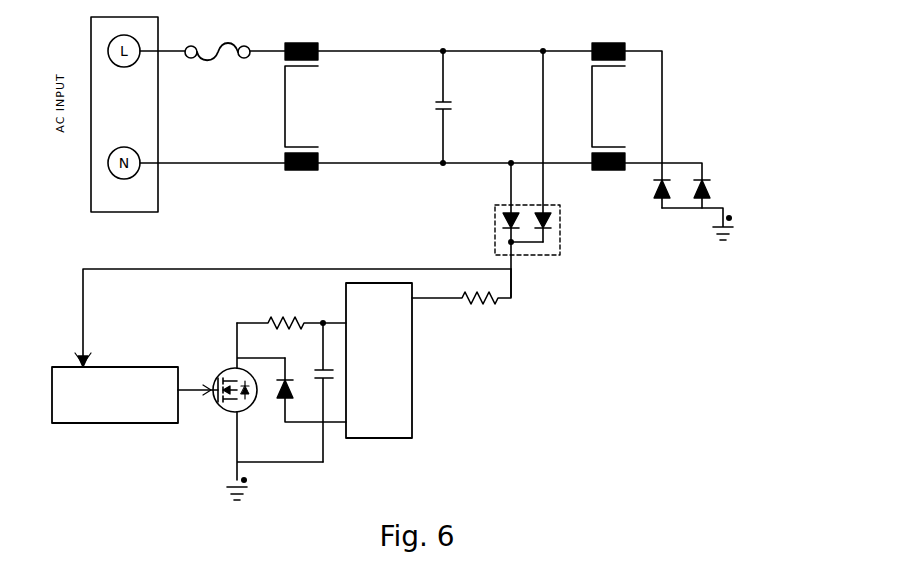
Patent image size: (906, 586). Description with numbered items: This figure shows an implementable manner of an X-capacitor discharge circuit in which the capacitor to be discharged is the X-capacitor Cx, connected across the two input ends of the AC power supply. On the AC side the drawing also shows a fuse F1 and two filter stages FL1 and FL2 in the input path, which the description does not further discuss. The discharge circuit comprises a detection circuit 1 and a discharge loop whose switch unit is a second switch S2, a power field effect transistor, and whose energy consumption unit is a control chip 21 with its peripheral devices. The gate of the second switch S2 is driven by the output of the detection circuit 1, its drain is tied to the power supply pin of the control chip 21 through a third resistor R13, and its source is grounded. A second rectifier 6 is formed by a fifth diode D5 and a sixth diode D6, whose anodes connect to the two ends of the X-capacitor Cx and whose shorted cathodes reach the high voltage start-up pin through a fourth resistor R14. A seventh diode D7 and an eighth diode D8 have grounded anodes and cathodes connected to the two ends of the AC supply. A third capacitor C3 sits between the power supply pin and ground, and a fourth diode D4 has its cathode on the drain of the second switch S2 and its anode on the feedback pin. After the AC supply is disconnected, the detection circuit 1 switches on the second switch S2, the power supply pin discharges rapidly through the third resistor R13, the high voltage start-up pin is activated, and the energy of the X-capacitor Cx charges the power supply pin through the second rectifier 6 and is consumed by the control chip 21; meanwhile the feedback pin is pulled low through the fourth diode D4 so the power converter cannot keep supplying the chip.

The detection circuit 1 is at (110, 423).
The second rectifier 6 is at (530, 255).
The control chip 21 is at (412, 360).
The fuse F1 is at (235, 36).
The first common-mode filter FL1 is at (301, 93).
The second common-mode filter FL2 is at (608, 93).
The X-capacitor Cx is at (433, 107).
The fifth diode D5 is at (495, 220).
The sixth diode D6 is at (560, 220).
The seventh diode D7 is at (654, 188).
The eighth diode D8 is at (712, 190).
The second switch S2 is at (213, 380).
The third resistor R13 is at (288, 316).
The fourth resistor R14 is at (481, 306).
The third capacitor C3 is at (316, 372).
The fourth diode D4 is at (283, 401).